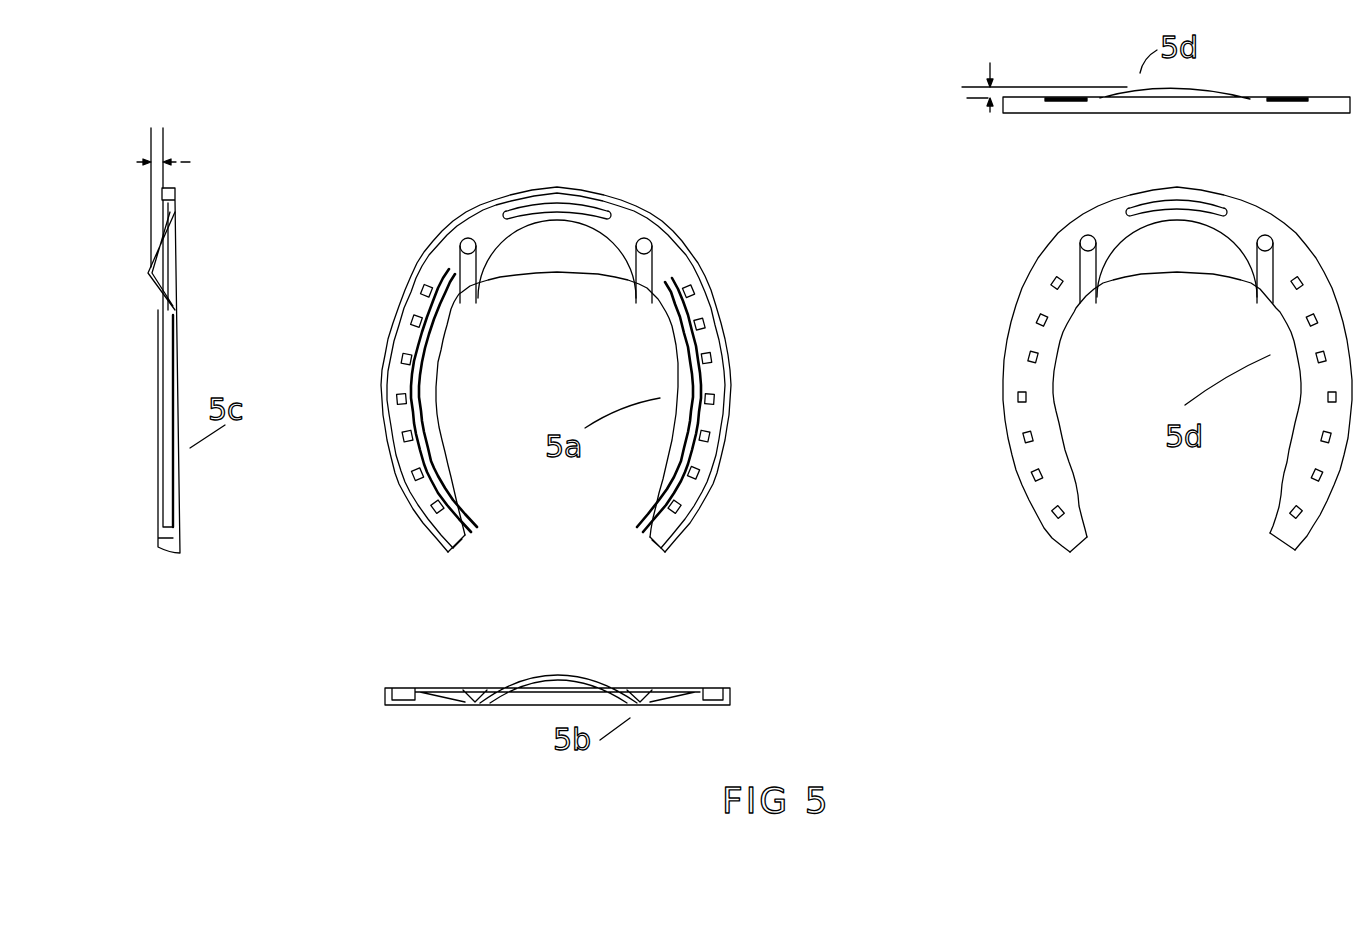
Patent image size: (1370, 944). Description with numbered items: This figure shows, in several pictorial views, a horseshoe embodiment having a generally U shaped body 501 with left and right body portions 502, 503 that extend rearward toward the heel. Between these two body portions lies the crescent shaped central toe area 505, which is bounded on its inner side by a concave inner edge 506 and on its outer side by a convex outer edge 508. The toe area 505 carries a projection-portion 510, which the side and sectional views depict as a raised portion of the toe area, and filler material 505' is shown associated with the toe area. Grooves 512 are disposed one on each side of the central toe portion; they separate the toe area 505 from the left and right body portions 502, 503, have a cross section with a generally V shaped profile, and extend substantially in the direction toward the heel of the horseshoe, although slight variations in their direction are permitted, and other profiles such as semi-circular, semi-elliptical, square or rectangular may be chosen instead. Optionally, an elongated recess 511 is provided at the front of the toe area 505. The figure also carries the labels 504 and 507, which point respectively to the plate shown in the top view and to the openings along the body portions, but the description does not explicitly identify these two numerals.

The generally U shaped body 501 is at (1078, 218).
The left body portion 502 is at (455, 548).
The right body portion 503 is at (662, 545).
The plate 504 is at (962, 97).
The toe area 505 is at (549, 217).
The filler material 505' is at (200, 261).
The concave inner edge 506 is at (545, 275).
The nail holes 507 is at (713, 400).
The convex outer edge 508 is at (602, 227).
The projection-portion 510 is at (162, 155).
The elongated recess 511 is at (1182, 205).
The grooves 512 is at (460, 262).